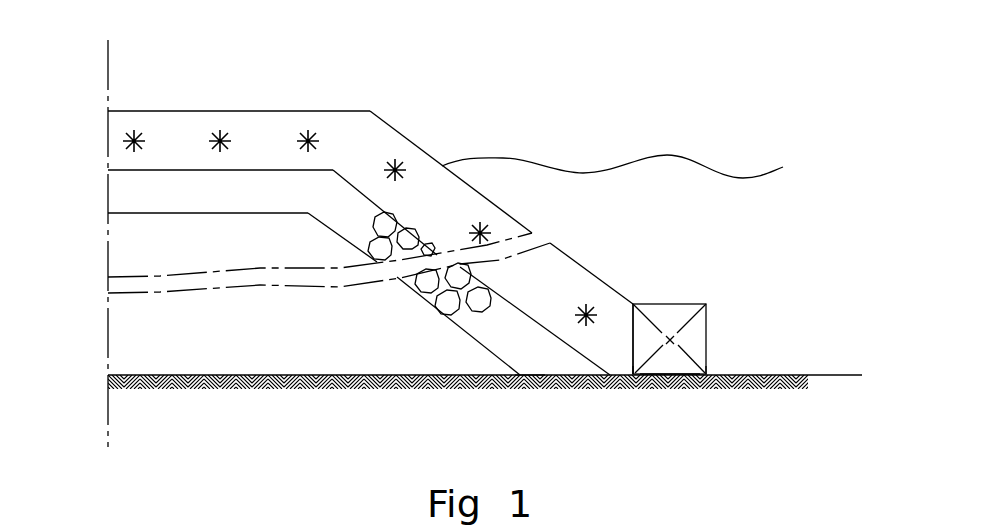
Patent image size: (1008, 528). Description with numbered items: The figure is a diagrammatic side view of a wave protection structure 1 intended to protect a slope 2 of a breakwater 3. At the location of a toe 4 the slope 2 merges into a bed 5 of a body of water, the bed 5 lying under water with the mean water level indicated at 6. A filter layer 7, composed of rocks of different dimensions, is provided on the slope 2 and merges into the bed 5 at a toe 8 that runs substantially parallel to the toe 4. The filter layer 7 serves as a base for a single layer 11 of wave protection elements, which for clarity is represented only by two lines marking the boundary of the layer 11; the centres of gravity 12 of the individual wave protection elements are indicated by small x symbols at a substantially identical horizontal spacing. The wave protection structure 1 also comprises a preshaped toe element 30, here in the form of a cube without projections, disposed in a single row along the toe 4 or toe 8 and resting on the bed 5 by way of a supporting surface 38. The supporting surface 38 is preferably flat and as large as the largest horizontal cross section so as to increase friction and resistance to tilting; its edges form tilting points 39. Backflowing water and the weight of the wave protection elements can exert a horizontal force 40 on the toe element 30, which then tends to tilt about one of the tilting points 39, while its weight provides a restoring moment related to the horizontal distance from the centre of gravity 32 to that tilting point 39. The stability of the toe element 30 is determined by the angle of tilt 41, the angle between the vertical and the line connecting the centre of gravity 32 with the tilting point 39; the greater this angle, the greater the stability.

The wave protection structure 1 is at (493, 63).
The slope 2 is at (488, 340).
The breakwater 3 is at (248, 325).
The toe 4 is at (535, 389).
The bed 5 is at (783, 357).
The mean water level 6 is at (695, 157).
The filter layer 7 is at (428, 240).
The toe 8 is at (608, 388).
The layer of wave protection elements 11 is at (416, 146).
The centres of gravity 12 is at (307, 133).
The toe element 30 is at (673, 303).
The centre of gravity 32 is at (670, 338).
The supporting surface 38 is at (672, 388).
The tilting points 39 is at (710, 370).
The horizontal force 40 is at (628, 333).
The angle of tilt 41 is at (697, 350).